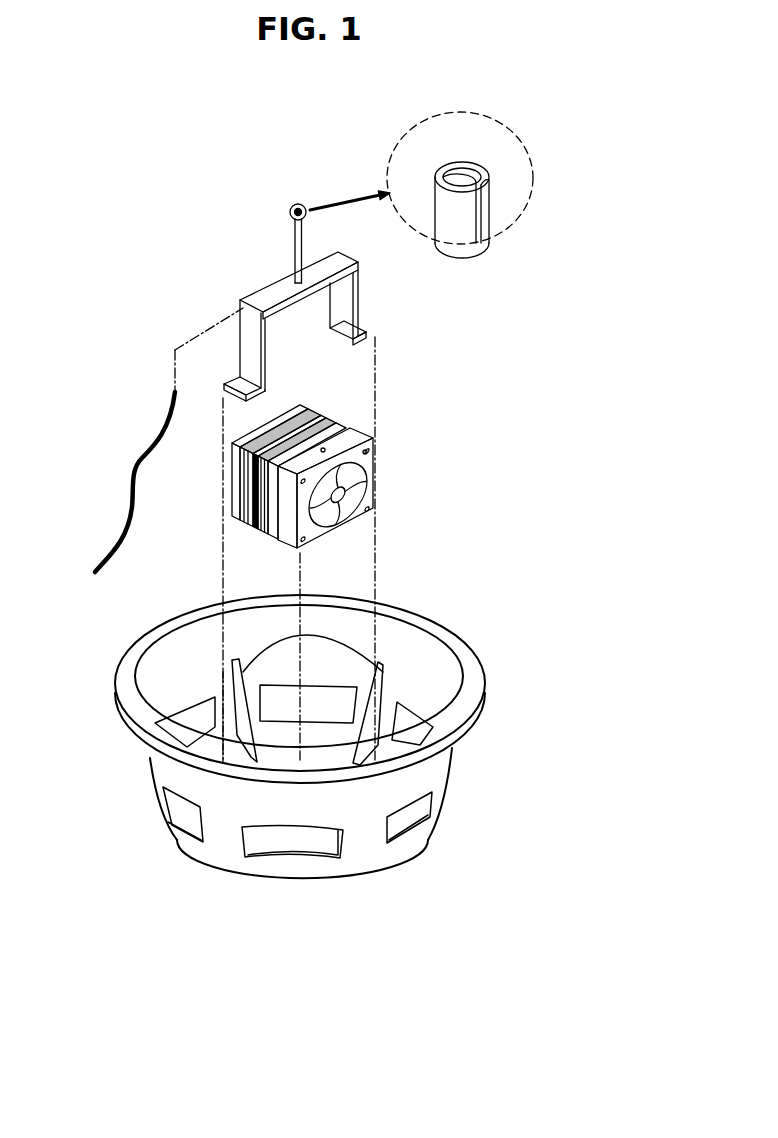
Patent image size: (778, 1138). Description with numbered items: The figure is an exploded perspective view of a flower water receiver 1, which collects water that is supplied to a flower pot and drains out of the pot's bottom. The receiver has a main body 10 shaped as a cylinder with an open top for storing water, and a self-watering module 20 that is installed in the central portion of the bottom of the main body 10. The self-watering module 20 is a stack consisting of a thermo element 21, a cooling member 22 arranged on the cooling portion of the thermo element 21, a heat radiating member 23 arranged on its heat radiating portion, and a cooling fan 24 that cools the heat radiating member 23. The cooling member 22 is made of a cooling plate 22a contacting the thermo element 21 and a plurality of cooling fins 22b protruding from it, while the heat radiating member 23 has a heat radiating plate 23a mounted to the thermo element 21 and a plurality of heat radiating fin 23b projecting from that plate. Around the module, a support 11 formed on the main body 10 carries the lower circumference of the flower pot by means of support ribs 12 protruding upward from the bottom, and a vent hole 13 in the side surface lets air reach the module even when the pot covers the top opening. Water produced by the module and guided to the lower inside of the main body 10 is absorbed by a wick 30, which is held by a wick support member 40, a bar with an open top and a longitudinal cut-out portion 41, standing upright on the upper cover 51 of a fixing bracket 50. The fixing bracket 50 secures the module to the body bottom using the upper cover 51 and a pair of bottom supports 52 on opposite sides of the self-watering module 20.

The flower water receiver 1 is at (170, 278).
The main body 10 is at (316, 756).
The support 11 is at (226, 686).
The support ribs 12 is at (243, 670).
The vent hole 13 is at (320, 847).
The self-watering module 20 is at (317, 461).
The thermo element 21 is at (317, 423).
The cooling member 22 is at (273, 447).
The cooling plate 22a is at (243, 467).
The cooling fins 22b is at (260, 432).
The heat radiating member 23 is at (358, 422).
The heat radiating plate 23a is at (253, 498).
The heat radiating fin 23b is at (325, 450).
The cooling fan 24 is at (365, 526).
The wick 30 is at (130, 475).
The wick support member 40 is at (436, 200).
The cut-out portion 41 is at (490, 203).
The fixing bracket 50 is at (326, 326).
The upper cover 51 is at (258, 292).
The bottom supports 52 is at (268, 357).